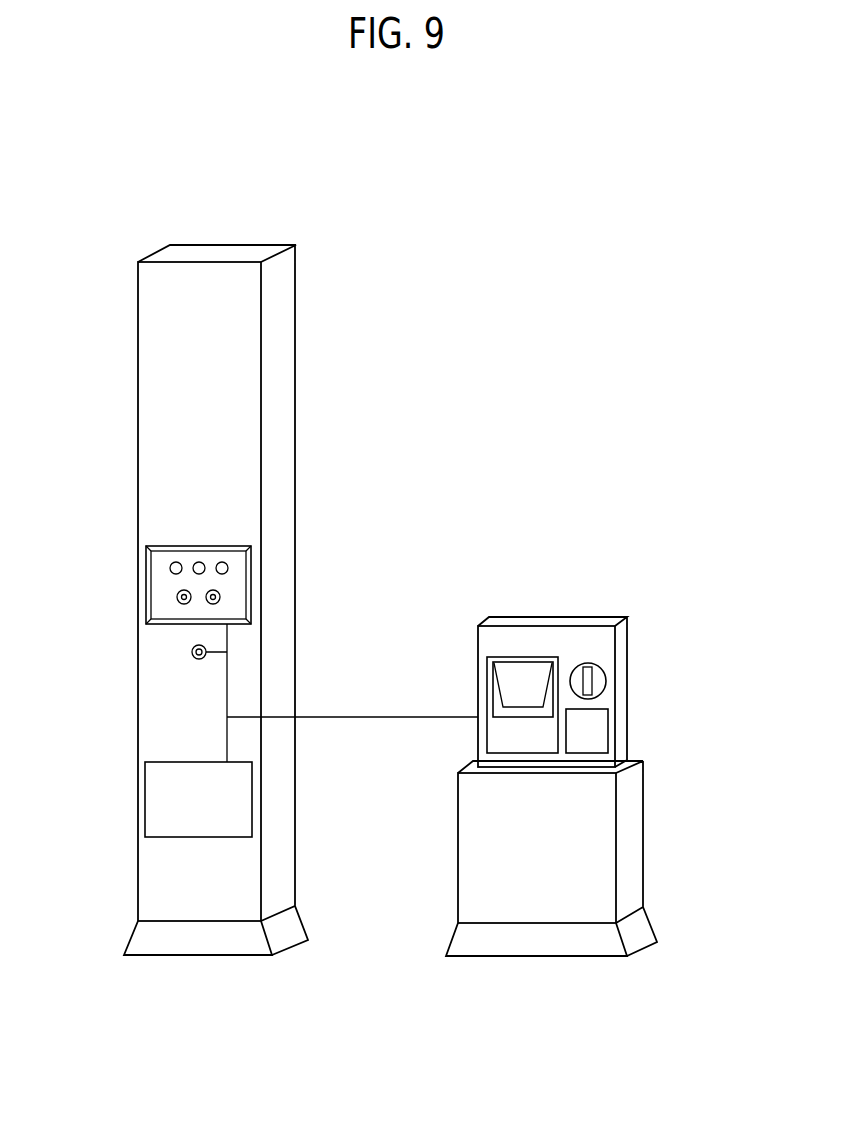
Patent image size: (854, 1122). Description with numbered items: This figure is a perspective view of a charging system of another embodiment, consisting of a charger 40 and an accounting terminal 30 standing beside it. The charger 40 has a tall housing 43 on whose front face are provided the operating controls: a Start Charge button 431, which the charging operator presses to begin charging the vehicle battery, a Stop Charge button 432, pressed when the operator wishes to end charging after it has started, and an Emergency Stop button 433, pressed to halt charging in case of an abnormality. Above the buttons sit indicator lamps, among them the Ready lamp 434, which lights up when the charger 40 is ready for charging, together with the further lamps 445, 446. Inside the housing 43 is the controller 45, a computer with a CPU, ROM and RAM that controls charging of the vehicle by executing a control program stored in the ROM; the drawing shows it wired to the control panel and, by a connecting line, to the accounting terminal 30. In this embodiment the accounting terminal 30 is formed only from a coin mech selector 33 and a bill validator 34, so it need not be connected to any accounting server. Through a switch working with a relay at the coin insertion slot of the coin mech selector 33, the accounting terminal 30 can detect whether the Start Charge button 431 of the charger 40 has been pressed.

The charger 40 is at (259, 600).
The housing 43 is at (281, 374).
The Ready lamp 434 is at (172, 563).
The indicator lamp 445 is at (205, 564).
The indicator lamp 446 is at (229, 567).
The Start Charge button 431 is at (177, 602).
The Stop Charge button 432 is at (221, 600).
The Emergency Stop button 433 is at (192, 653).
The controller 45 is at (145, 803).
The accounting terminal 30 is at (576, 786).
The coin mech selector 33 is at (592, 664).
The bill validator 34 is at (507, 683).